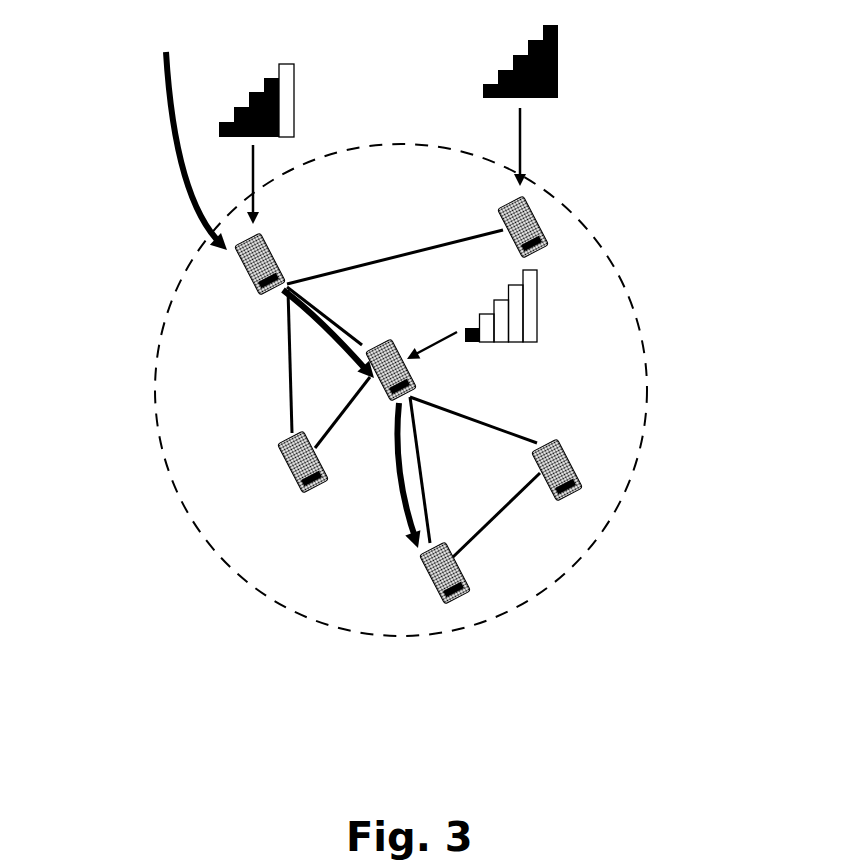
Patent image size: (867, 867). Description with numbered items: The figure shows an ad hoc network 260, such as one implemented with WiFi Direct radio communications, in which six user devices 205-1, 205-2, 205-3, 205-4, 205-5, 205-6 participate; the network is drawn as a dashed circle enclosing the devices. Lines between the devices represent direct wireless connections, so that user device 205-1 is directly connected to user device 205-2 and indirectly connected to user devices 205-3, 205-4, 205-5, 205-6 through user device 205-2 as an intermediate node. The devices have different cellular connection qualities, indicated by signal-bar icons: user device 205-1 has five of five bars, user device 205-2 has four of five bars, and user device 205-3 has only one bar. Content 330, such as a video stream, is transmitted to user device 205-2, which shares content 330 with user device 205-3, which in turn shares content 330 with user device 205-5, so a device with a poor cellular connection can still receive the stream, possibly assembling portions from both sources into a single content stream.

The user device 205-1 is at (495, 203).
The user device 205-2 is at (277, 248).
The user device 205-3 is at (390, 336).
The user device 205-4 is at (274, 437).
The user device 205-5 is at (467, 572).
The user device 205-6 is at (567, 422).
The ad hoc network 260 is at (627, 283).
The content 330 is at (388, 506).